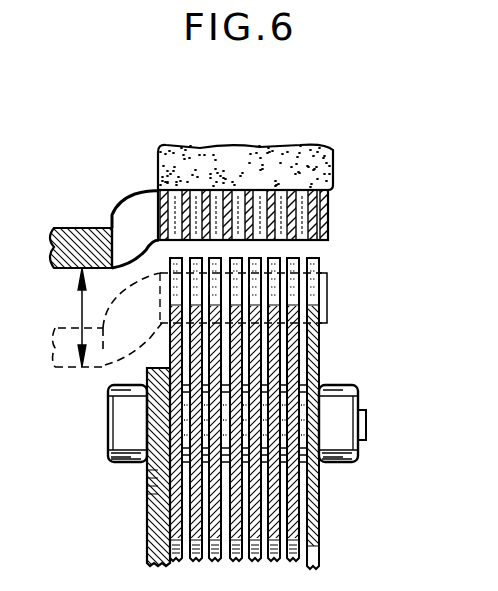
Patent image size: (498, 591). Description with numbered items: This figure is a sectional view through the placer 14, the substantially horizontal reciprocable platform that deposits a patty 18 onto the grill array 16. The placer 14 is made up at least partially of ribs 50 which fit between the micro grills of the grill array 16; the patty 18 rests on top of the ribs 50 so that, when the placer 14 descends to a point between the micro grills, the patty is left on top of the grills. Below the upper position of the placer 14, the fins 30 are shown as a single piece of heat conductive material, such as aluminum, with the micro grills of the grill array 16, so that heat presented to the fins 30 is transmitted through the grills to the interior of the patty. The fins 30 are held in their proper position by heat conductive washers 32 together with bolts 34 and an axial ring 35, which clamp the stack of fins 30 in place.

The placer 14 is at (79, 240).
The grill array 16 is at (327, 292).
The patty 18 is at (333, 165).
The fins 30 is at (255, 495).
The heat conductive washers 32 is at (205, 466).
The bolts 34 is at (120, 432).
The axial ring 35 is at (112, 415).
The ribs 50 is at (292, 219).